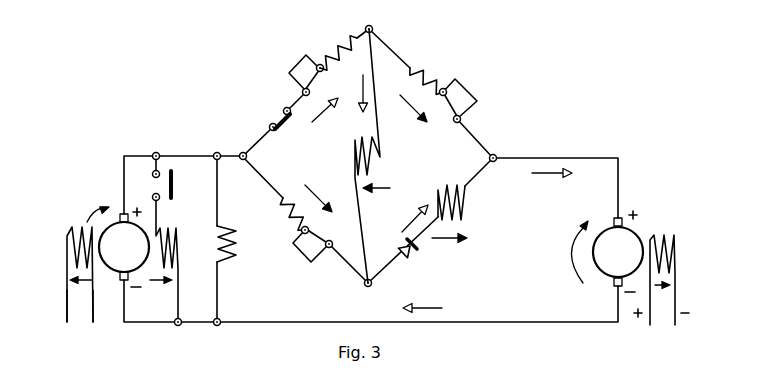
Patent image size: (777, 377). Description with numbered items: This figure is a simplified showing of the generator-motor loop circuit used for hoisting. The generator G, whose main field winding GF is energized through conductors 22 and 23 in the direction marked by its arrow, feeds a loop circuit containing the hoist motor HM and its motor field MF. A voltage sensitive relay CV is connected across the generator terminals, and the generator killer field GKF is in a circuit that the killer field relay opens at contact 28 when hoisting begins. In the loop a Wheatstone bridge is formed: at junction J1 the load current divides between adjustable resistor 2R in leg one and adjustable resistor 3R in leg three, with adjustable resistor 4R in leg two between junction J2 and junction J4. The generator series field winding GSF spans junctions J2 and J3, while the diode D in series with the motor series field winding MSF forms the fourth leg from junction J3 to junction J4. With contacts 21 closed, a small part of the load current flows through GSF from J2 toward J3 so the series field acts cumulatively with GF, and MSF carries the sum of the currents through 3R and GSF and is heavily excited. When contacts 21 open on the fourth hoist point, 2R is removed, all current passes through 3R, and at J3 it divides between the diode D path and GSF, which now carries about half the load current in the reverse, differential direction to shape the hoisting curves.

The contacts 21 is at (283, 123).
The conductor 22 is at (93, 320).
The conductor 23 is at (67, 320).
The contact 28 is at (175, 187).
The junction J1 is at (246, 136).
The junction J2 is at (378, 12).
The junction J3 is at (372, 286).
The junction J4 is at (499, 134).
The resistor 2R is at (334, 57).
The resistor 3R is at (289, 210).
The resistor 4R is at (439, 84).
The generator series field winding GSF is at (381, 161).
The motor series field winding MSF is at (464, 207).
The generator main field winding GF is at (67, 241).
The generator killer field GKF is at (178, 256).
The voltage sensitive relay CV is at (220, 260).
The generator G is at (109, 270).
The hoist motor HM is at (604, 273).
The motor field MF is at (677, 249).
The diode D is at (412, 253).